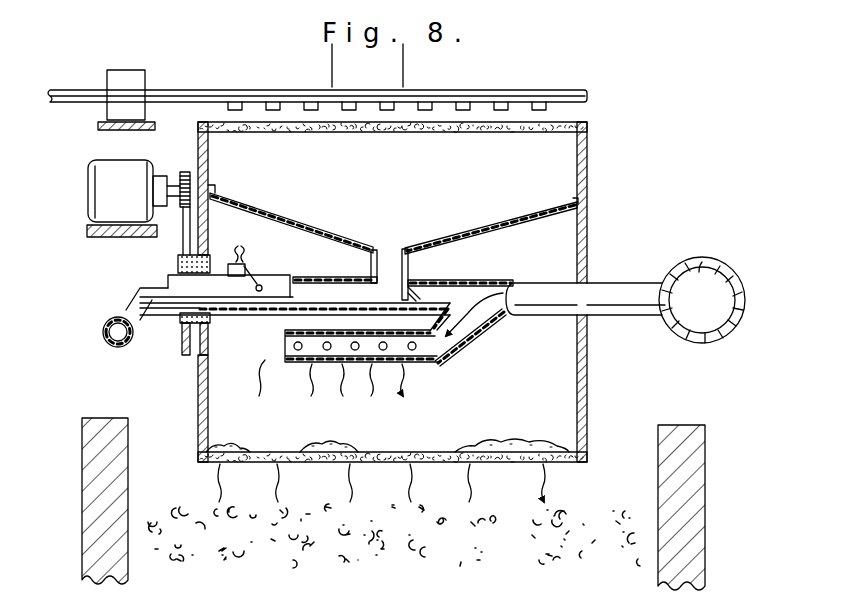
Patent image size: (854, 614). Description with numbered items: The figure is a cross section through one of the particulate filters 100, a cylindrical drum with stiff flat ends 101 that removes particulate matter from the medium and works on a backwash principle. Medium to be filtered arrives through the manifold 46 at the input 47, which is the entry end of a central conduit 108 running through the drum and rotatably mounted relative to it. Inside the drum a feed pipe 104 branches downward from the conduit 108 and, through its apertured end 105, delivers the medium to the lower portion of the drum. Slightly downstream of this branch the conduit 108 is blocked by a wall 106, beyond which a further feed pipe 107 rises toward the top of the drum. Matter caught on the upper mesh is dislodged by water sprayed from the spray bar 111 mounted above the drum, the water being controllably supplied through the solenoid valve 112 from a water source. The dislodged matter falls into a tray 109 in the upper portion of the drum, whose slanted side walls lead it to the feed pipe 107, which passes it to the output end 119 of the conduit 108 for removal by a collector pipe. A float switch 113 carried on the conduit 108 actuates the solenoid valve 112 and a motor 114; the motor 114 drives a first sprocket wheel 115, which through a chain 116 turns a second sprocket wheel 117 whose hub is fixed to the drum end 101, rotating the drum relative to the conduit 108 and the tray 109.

The manifold 46 is at (693, 258).
The input 47 is at (625, 282).
The particulate filter 100 is at (600, 208).
The flat end 101 is at (199, 386).
The feed pipe 104 is at (448, 352).
The apertured end 105 is at (285, 342).
The wall 106 is at (440, 284).
The further feed pipe 107 is at (370, 263).
The conduit 108 is at (547, 282).
The tray 109 is at (538, 210).
The spray bar 111 is at (502, 97).
The solenoid valve 112 is at (137, 75).
The float switch 113 is at (243, 272).
The motor 114 is at (112, 168).
The first sprocket wheel 115 is at (187, 171).
The chain 116 is at (180, 230).
The second sprocket wheel 117 is at (178, 272).
The output end 119 is at (122, 300).